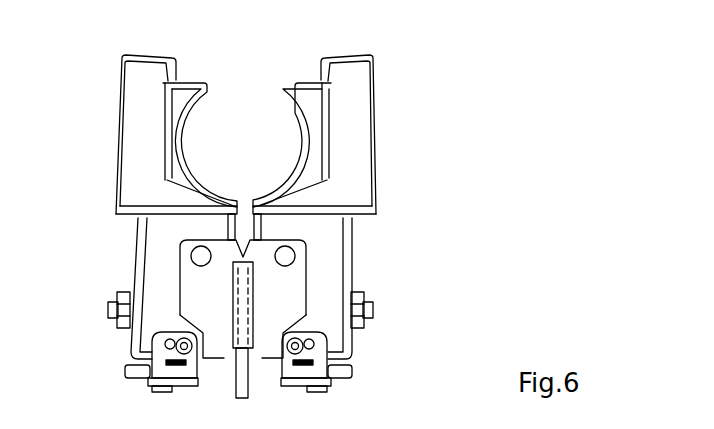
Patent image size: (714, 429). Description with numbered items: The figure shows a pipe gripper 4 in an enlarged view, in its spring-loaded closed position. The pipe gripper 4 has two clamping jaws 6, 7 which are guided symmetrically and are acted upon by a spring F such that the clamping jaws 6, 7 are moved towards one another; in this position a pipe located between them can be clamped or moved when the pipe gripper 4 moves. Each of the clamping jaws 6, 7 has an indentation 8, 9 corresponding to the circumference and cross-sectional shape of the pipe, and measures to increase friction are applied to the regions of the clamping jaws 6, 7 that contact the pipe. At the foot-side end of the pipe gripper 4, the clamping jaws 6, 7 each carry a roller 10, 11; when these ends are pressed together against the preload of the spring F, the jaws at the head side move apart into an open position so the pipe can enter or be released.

The pipe gripper 4 is at (375, 120).
The clamping jaw 6 is at (142, 150).
The clamping jaw 7 is at (352, 158).
The indentation 8 is at (207, 163).
The indentation 9 is at (293, 163).
The roller 10 is at (126, 373).
The roller 11 is at (342, 375).
The spring F is at (249, 300).